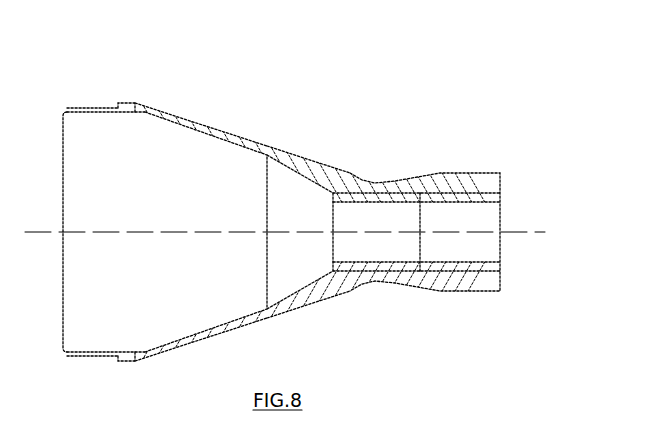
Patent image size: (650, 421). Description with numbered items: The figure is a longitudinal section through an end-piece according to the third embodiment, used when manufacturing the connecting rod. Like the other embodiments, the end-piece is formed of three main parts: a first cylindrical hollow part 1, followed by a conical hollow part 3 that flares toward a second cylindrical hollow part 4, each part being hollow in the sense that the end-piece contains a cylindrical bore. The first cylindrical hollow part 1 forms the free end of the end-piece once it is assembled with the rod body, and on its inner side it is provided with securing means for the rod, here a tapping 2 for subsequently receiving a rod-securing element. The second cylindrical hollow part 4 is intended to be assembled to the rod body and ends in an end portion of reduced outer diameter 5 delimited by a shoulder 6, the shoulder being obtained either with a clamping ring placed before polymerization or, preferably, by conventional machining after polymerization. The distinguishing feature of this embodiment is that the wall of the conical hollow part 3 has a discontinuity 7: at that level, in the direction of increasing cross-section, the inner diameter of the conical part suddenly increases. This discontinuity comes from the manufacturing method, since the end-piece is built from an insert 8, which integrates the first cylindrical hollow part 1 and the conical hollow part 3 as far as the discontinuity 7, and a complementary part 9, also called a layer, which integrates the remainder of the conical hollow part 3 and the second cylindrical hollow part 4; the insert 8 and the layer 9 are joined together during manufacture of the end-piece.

The first cylindrical hollow part 1 is at (436, 142).
The tapping 2 is at (480, 198).
The conical hollow part 3 is at (230, 102).
The second cylindrical hollow part 4 is at (127, 64).
The end portion of reduced outer diameter 5 is at (80, 100).
The shoulder 6 is at (115, 98).
The discontinuity 7 is at (268, 146).
The insert 8 is at (325, 171).
The complementary part 9 is at (168, 110).